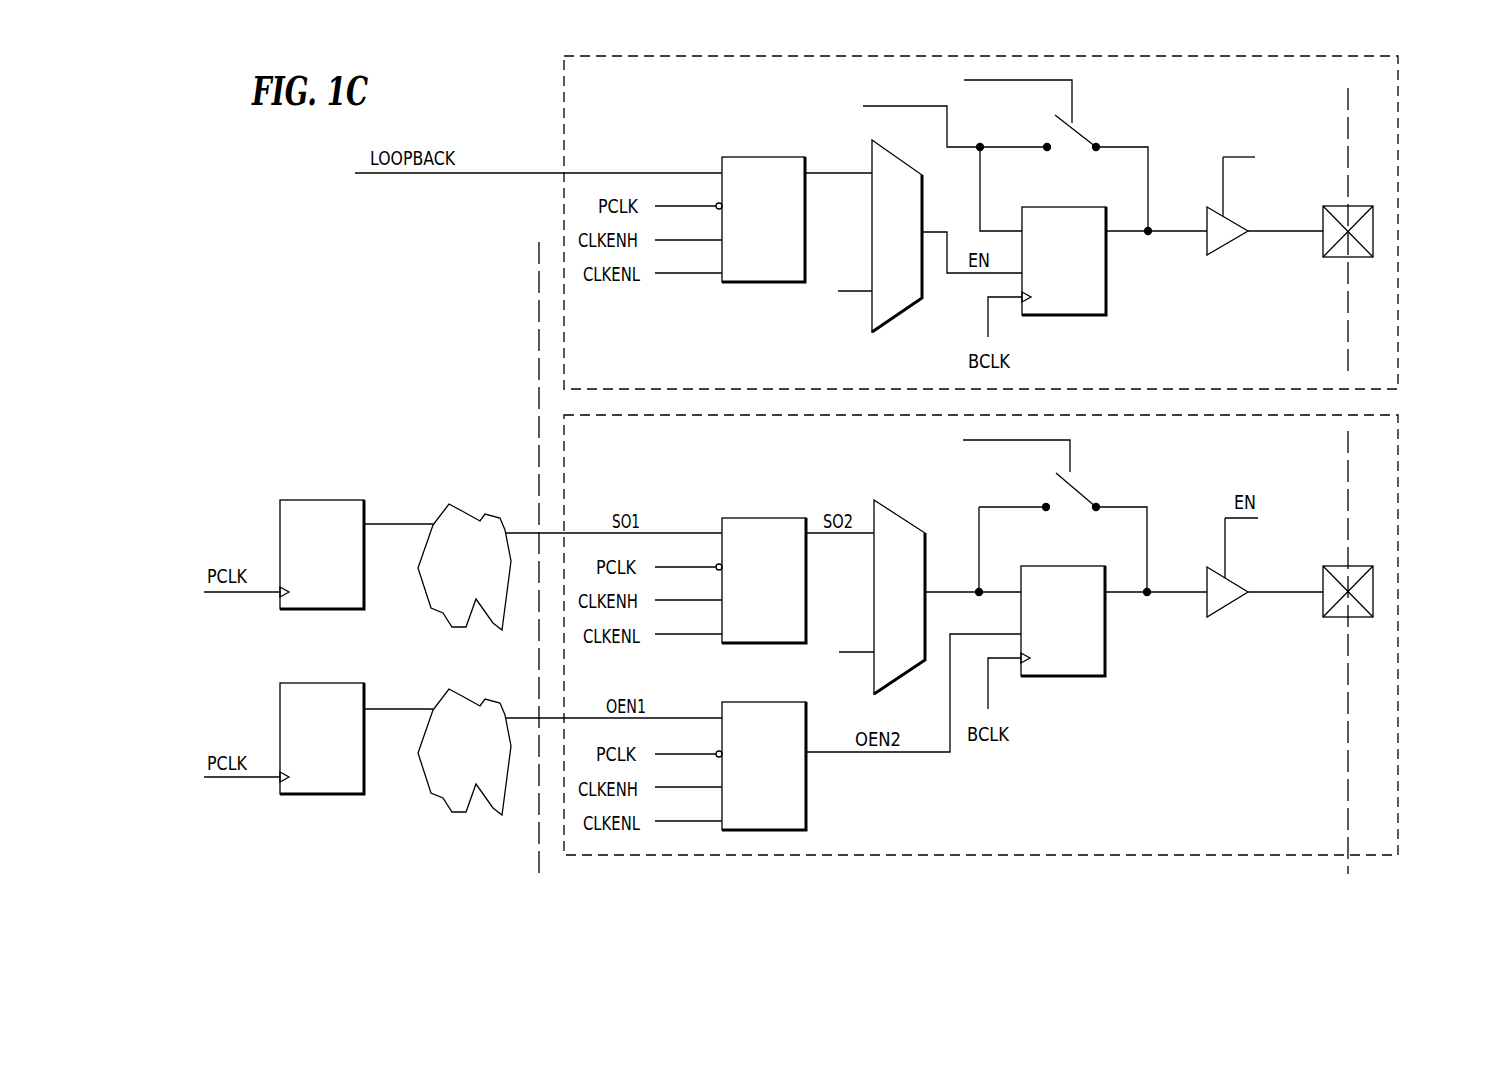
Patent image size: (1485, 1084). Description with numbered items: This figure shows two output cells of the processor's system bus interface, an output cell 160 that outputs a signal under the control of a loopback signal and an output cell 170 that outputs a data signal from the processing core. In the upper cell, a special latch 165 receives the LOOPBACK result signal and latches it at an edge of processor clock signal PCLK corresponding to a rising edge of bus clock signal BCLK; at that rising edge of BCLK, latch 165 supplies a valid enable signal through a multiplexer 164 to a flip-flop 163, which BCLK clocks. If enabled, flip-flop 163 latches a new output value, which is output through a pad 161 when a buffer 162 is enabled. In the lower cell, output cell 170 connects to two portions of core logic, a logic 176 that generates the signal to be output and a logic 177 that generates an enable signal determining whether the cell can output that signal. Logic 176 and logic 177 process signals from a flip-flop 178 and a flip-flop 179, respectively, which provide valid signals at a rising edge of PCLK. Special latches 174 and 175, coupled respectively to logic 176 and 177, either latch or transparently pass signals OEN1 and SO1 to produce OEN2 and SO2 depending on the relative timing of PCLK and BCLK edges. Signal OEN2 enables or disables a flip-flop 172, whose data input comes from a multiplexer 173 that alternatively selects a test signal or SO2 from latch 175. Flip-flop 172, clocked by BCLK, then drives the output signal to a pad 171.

The output cell 160 is at (1398, 338).
The pad 161 is at (1320, 242).
The buffer 162 is at (1223, 253).
The flip-flop 163 is at (1087, 316).
The multiplexer 164 is at (892, 325).
The special latch 165 is at (788, 283).
The output cell 170 is at (1398, 770).
The pad 171 is at (1322, 603).
The flip-flop 172 is at (1087, 677).
The multiplexer 173 is at (901, 511).
The special latch 174 is at (806, 811).
The special latch 175 is at (756, 517).
The logic 176 is at (447, 801).
The logic 177 is at (457, 506).
The flip-flop 178 is at (347, 795).
The flip-flop 179 is at (311, 499).